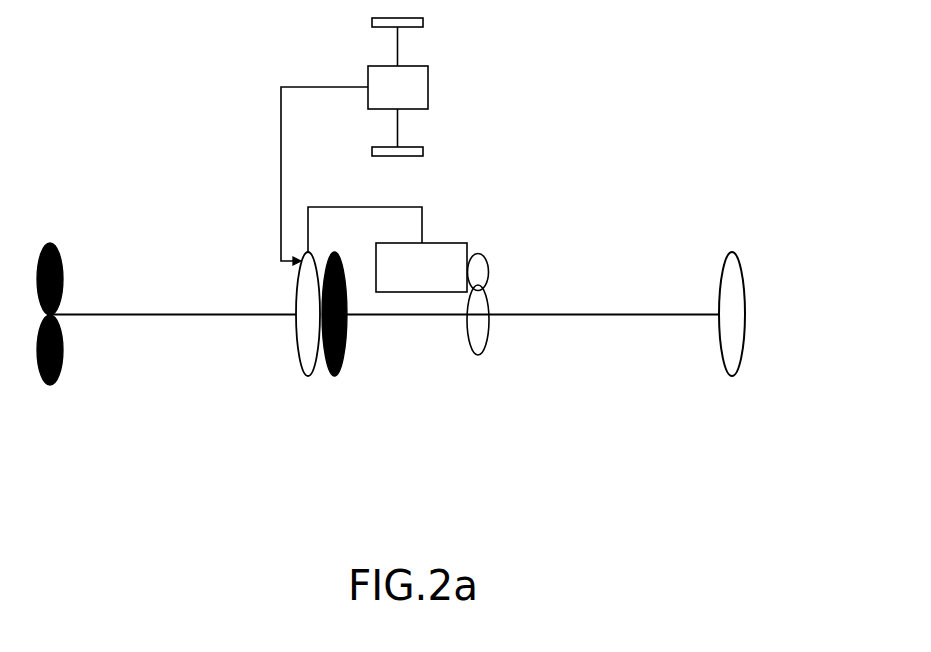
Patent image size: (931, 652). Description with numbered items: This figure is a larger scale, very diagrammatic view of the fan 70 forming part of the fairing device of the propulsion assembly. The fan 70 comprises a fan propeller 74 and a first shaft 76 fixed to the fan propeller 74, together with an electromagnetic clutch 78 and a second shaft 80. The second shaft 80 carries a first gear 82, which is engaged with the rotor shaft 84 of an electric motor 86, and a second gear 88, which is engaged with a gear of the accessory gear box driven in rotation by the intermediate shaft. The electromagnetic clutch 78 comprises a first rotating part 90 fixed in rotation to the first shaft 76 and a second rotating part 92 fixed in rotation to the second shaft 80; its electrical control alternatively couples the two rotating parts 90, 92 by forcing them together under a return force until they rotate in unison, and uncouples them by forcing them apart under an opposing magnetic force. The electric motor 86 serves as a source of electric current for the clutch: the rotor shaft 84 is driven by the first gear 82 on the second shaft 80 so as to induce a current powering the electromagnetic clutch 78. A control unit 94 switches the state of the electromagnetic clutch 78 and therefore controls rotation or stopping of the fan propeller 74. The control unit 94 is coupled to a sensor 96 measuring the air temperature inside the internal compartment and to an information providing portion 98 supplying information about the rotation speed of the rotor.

The fan 70 is at (141, 171).
The fan propeller 74 is at (63, 355).
The first shaft 76 is at (185, 315).
The electromagnetic clutch 78 is at (320, 375).
The second shaft 80 is at (583, 315).
The first gear 82 is at (481, 353).
The rotor shaft 84 is at (489, 276).
The electric motor 86 is at (447, 242).
The second gear 88 is at (733, 366).
The first rotating part 90 is at (308, 374).
The second rotating part 92 is at (334, 376).
The control unit 94 is at (428, 78).
The sensor 96 is at (408, 146).
The information providing portion 98 is at (408, 28).